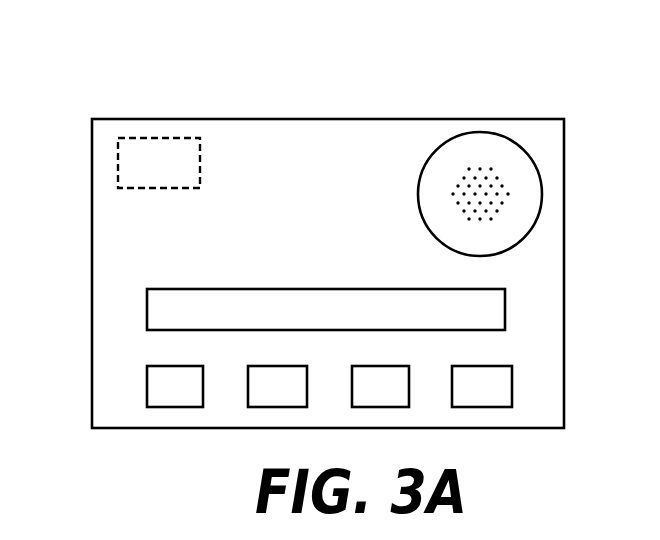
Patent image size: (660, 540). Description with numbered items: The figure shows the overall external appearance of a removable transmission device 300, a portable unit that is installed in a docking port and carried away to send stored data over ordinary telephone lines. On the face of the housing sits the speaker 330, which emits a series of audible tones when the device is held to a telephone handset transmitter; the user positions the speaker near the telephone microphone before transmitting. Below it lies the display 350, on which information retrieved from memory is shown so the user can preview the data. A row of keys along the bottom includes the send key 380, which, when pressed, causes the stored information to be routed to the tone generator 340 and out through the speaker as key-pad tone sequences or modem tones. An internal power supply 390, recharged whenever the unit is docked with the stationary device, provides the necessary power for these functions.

The portable electronic device housing 300 is at (328, 229).
The speaker 330 is at (526, 194).
The tone generator 340 is at (374, 309).
The display 350 is at (429, 386).
The send key 380 is at (123, 386).
The internal power supply 390 is at (109, 163).